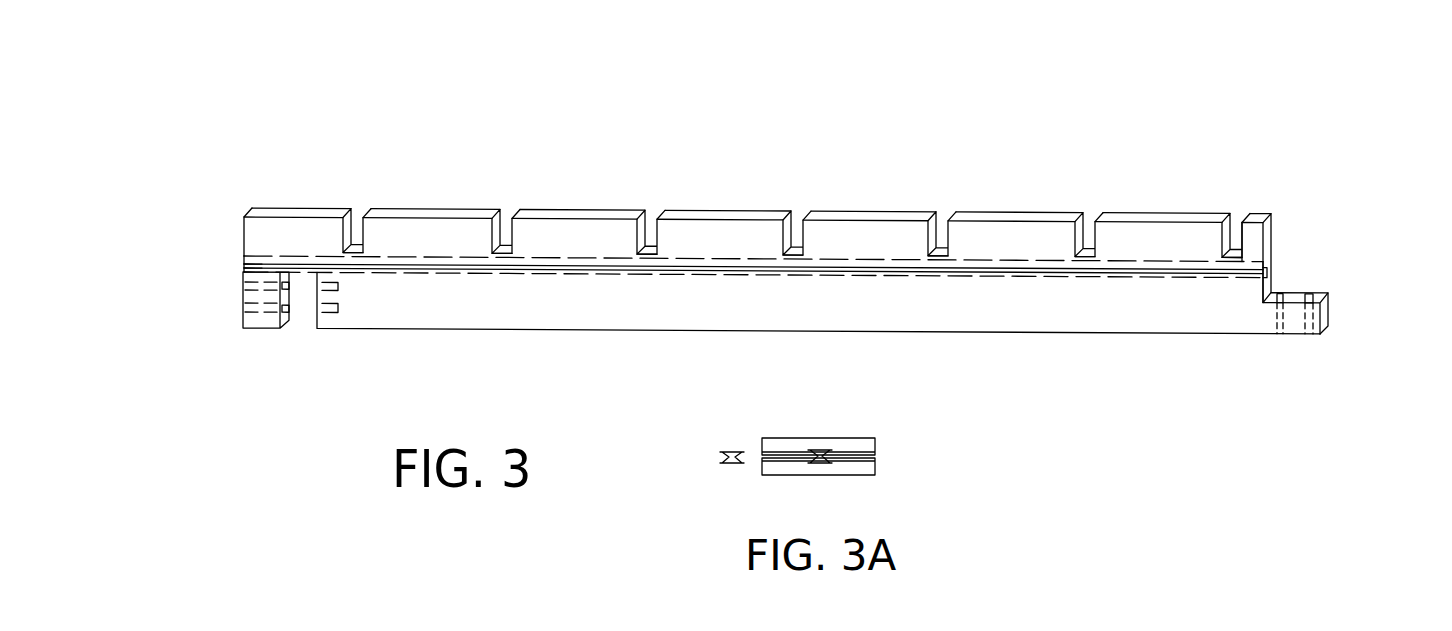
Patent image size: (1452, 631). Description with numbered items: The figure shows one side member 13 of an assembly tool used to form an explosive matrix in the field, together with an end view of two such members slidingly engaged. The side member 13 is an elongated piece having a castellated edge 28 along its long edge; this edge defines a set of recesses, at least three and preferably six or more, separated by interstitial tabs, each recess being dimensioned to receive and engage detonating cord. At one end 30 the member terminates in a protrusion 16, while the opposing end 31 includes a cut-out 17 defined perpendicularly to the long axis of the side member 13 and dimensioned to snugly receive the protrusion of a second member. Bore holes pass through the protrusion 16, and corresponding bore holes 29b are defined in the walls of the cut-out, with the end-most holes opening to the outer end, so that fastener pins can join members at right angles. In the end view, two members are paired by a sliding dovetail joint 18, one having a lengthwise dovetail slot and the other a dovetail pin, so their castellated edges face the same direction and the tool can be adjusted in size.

In FIG. 3, the side member 13 is at (1305, 360).
In FIG. 3A, the side member 13 is at (875, 447).
In FIG. 3, the protrusion 16 is at (1326, 283).
In FIG. 3, the cut-out 17 is at (289, 318).
In FIG. 3A, the sliding dovetail joint 18 is at (734, 468).
In FIG. 3, the castellated edge 28 is at (1328, 113).
In FIG. 3, the bore holes 29b is at (230, 273).
In FIG. 3, the end 30 is at (1332, 313).
In FIG. 3, the opposing end 31 is at (232, 307).